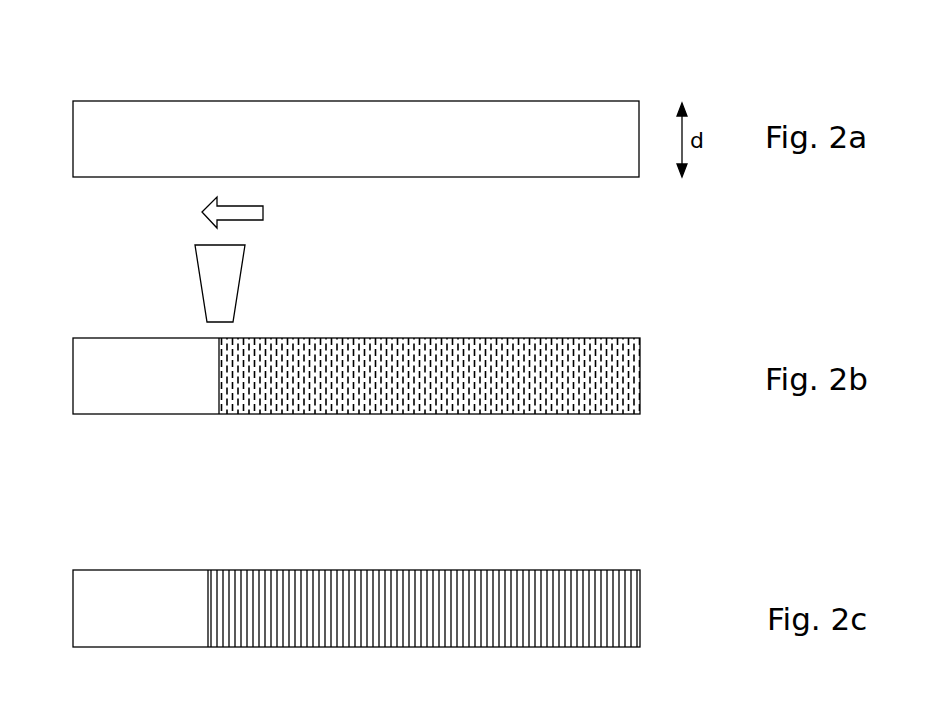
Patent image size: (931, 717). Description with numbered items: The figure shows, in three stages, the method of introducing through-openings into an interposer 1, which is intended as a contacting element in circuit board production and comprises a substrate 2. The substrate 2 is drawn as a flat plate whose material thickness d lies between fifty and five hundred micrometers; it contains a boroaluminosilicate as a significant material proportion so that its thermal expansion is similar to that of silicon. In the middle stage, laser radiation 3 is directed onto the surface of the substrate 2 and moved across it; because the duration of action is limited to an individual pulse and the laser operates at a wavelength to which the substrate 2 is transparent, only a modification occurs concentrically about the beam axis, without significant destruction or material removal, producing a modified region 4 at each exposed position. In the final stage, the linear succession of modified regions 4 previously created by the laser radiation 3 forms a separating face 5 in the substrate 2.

In FIG. 2C, the interposer 1 is at (68, 560).
In FIG. 2A, the substrate 2 is at (135, 120).
In FIG. 2B, the laser radiation 3 is at (188, 260).
In FIG. 2B, the modified region 4 is at (269, 410).
In FIG. 2C, the separating face 5 is at (346, 656).